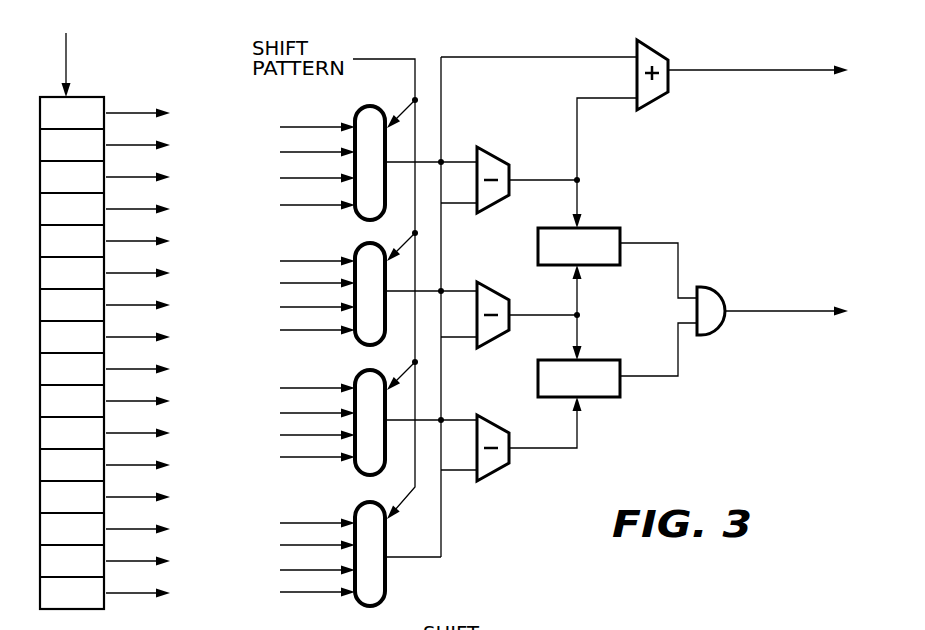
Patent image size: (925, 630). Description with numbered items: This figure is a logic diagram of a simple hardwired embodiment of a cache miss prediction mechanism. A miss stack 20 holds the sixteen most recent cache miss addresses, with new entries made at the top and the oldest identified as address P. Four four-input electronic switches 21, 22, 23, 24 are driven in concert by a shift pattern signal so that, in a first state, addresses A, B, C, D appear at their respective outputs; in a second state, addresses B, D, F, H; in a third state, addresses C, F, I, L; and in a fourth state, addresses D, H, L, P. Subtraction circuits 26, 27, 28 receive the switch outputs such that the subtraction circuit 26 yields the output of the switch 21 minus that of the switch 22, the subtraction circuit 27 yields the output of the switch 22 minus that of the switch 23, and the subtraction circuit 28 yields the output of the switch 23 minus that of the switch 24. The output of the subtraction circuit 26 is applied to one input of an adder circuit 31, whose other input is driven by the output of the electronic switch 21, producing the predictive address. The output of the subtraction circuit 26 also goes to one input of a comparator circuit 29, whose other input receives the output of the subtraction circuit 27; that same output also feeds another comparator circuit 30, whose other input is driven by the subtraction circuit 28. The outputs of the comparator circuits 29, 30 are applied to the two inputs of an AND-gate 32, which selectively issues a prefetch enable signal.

The miss stack 20 is at (100, 80).
The electronic switch 21 is at (356, 214).
The electronic switch 22 is at (356, 338).
The electronic switch 23 is at (356, 468).
The electronic switch 24 is at (356, 598).
The subtraction circuit 26 is at (510, 167).
The subtraction circuit 27 is at (488, 262).
The subtraction circuit 28 is at (507, 396).
The comparator circuit 29 is at (622, 229).
The comparator circuit 30 is at (616, 360).
The adder circuit 31 is at (659, 42).
The AND-gate 32 is at (725, 262).